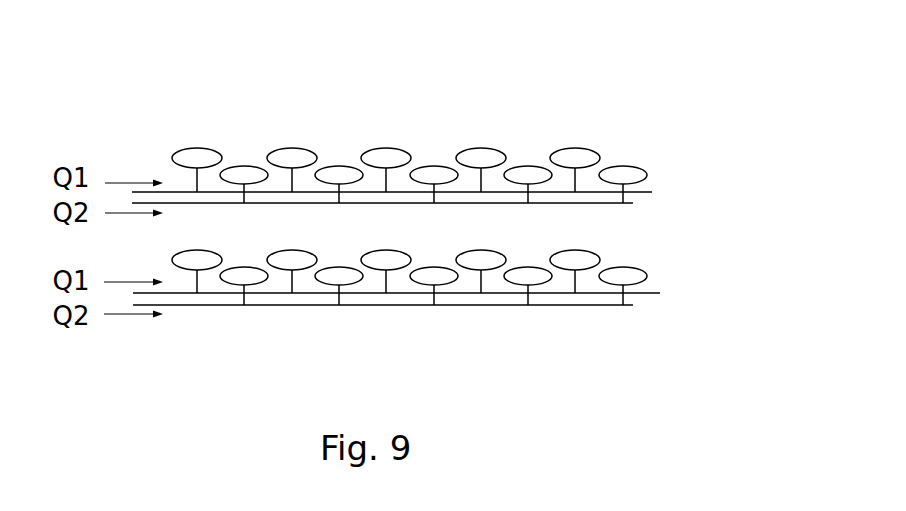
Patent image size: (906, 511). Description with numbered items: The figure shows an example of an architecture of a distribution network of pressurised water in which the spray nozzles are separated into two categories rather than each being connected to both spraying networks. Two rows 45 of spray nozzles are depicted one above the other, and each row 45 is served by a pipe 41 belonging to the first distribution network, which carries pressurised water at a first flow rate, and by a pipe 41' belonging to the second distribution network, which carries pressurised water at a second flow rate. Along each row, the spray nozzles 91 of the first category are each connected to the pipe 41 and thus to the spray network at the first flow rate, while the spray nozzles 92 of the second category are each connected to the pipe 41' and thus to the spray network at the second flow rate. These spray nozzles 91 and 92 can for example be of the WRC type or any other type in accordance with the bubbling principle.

The row 45 is at (155, 163).
The spray nozzle of a first category 91 is at (560, 152).
The spray nozzle of a second category 92 is at (622, 172).
The pipe 41 is at (451, 217).
The pipe 41' is at (449, 301).